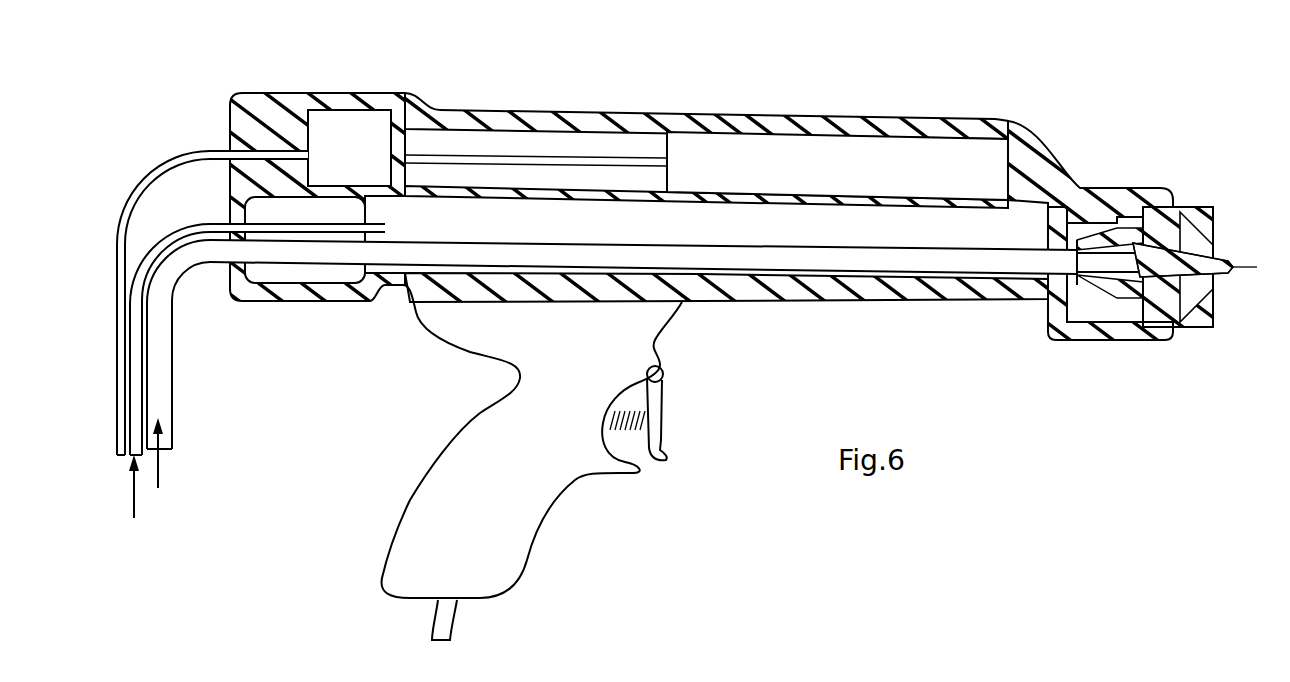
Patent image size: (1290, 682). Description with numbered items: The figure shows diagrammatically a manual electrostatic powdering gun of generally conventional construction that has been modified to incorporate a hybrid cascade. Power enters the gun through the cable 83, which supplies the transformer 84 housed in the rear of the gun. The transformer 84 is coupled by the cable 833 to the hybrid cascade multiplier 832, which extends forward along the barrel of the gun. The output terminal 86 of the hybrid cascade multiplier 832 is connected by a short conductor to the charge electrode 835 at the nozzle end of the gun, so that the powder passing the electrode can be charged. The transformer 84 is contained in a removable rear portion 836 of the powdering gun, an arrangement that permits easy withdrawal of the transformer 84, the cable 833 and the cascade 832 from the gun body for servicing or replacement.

The cable 83 is at (190, 162).
The removable rear portion 836 is at (282, 100).
The transformer 84 is at (353, 125).
The cable 833 is at (507, 158).
The hybrid cascade multiplier 832 is at (752, 153).
The output terminal 86 is at (1015, 167).
The charge electrode 835 is at (1253, 267).